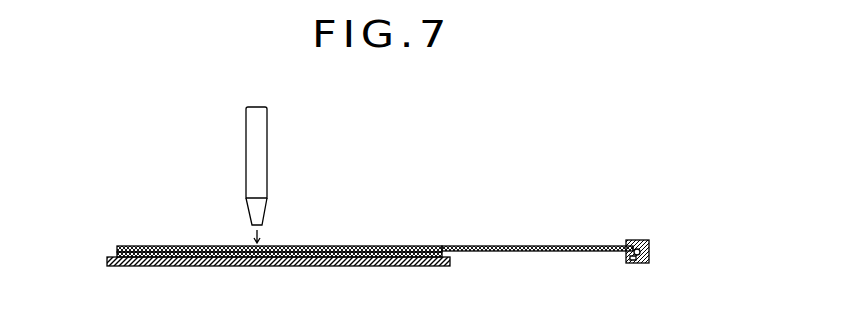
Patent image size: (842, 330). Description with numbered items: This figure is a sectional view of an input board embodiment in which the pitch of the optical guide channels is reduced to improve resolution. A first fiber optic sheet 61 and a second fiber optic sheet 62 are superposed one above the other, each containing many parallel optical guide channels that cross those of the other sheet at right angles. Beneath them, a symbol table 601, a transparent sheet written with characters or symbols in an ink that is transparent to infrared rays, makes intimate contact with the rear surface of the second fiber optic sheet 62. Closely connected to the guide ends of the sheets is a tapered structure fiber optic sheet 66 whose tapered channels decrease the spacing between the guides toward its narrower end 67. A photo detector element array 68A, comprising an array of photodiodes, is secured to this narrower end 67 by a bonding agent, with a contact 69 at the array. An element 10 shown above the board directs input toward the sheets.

The laser beam / welding tool 10 is at (267, 152).
The first fiber optic sheet 61 is at (130, 246).
The second fiber optic sheet 62 is at (117, 252).
The symbol table 601 is at (112, 266).
The tapered structure fiber optic sheet 66 is at (505, 246).
The narrower end 67 is at (631, 241).
The photo detector element array 68A is at (642, 241).
The connector contact 69 is at (633, 264).